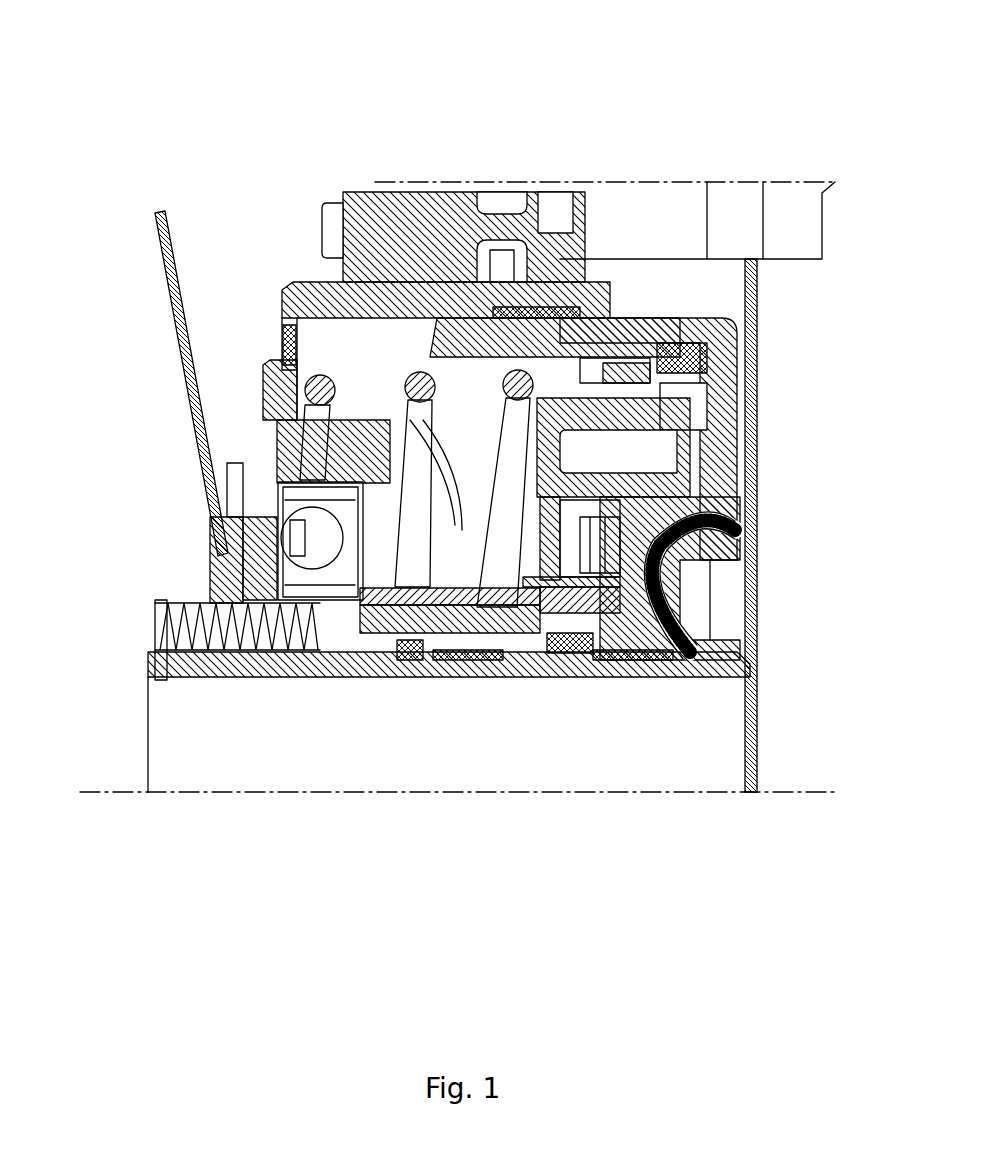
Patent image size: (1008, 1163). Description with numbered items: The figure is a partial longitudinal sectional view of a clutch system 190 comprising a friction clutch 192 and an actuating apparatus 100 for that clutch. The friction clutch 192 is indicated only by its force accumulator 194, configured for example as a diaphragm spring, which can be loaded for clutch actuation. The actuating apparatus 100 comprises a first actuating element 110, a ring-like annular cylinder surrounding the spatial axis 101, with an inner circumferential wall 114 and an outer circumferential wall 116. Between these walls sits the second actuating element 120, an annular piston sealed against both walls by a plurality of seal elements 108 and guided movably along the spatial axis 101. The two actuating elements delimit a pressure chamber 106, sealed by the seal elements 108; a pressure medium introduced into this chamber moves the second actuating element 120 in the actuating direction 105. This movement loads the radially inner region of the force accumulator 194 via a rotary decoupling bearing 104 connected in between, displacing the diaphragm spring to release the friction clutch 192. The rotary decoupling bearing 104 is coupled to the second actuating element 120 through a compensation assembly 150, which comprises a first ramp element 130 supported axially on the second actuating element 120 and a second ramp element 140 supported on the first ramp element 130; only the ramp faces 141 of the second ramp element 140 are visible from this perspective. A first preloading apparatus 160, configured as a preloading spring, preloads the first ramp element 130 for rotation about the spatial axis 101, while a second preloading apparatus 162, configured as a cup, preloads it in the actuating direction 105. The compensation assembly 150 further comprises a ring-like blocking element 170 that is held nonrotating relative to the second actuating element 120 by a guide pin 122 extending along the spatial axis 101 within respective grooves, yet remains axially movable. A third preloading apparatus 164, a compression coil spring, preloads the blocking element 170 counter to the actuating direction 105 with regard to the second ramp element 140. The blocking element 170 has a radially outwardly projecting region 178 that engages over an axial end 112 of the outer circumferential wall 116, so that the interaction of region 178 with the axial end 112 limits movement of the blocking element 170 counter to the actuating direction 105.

The actuating apparatus 100 is at (185, 104).
The spatial axis 101 is at (100, 796).
The rotary decoupling bearing 104 is at (222, 567).
The actuating direction 105 is at (40, 573).
The pressure chamber 106 is at (717, 527).
The seal elements 108 is at (680, 365).
The first actuating element 110 is at (745, 480).
The axial end 112 is at (437, 375).
The inner circumferential wall 114 is at (713, 672).
The outer circumferential wall 116 is at (693, 323).
The second actuating element 120 is at (723, 533).
The guide pin 122 is at (618, 365).
The first ramp element 130 is at (645, 462).
The second ramp element 140 is at (275, 365).
The ramp faces 141 is at (455, 522).
The compensation assembly 150 is at (573, 345).
The first preloading apparatus 160 is at (573, 567).
The second preloading apparatus 162 is at (703, 430).
The third preloading apparatus 164 is at (310, 377).
The blocking element 170 is at (498, 377).
The radially outwardly projecting region 178 is at (430, 340).
The clutch system 190 is at (643, 912).
The friction clutch 192 is at (122, 353).
The force accumulator 194 is at (160, 255).